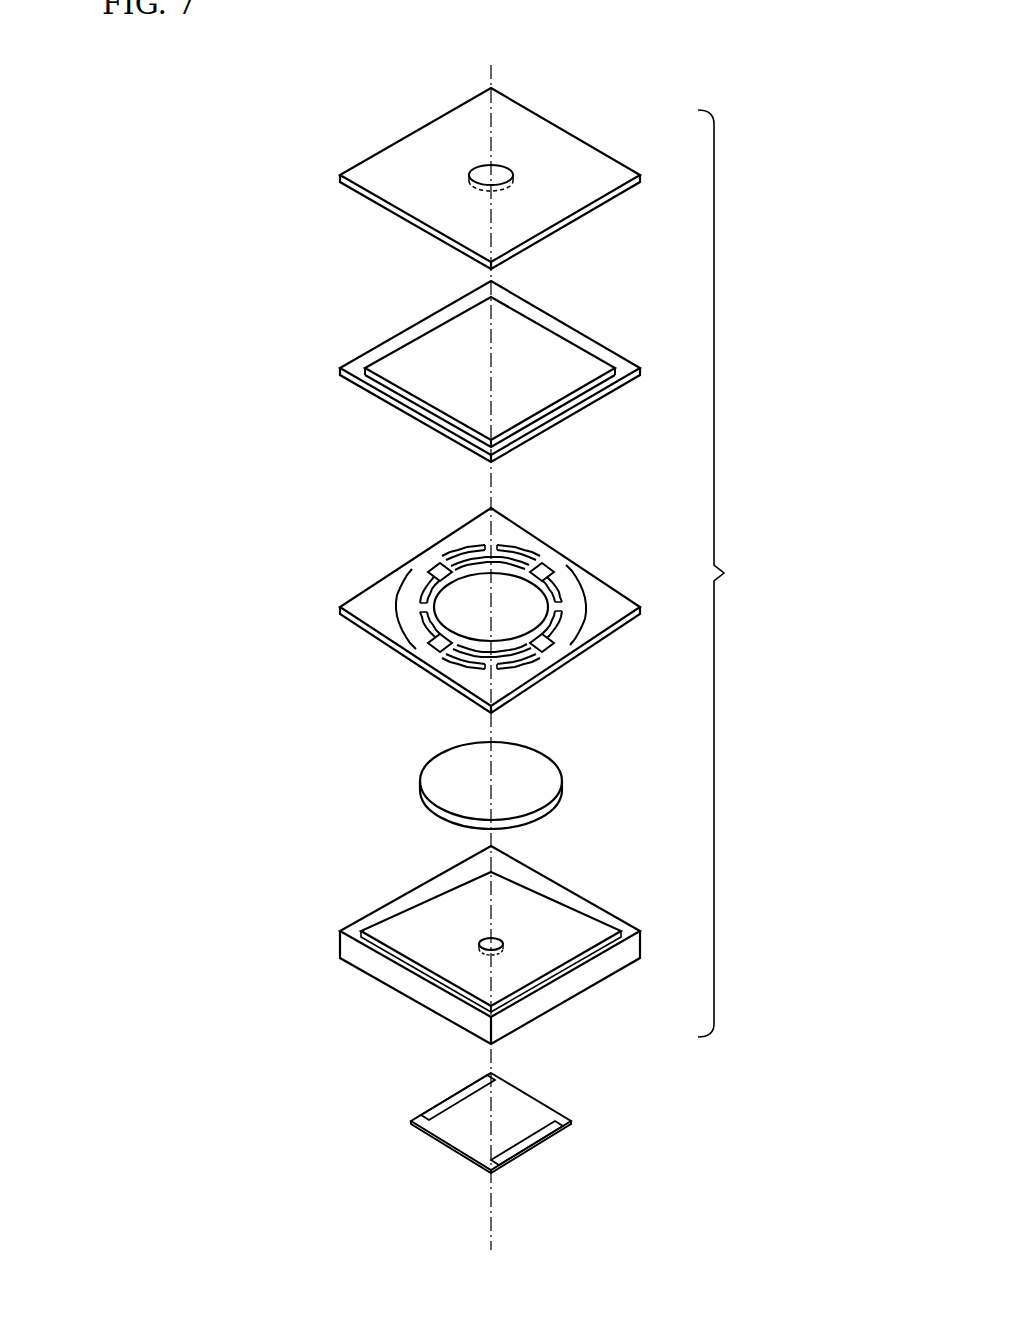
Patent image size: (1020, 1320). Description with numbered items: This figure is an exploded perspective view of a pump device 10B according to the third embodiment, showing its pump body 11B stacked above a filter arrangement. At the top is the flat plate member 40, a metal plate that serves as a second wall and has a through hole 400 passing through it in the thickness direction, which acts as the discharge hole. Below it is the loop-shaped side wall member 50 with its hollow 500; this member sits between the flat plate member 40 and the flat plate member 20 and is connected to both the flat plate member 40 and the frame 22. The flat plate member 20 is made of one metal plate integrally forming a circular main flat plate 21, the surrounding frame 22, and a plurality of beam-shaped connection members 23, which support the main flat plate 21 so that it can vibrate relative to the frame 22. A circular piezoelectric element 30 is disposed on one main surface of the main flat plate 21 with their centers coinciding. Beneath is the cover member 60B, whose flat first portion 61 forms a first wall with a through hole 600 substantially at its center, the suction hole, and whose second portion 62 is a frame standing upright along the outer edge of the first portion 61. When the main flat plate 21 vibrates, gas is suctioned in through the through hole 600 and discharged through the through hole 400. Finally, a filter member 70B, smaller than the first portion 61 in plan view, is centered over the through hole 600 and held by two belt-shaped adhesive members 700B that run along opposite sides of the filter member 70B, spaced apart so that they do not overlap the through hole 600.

The pump device 10B is at (654, 77).
The pump body 11B is at (739, 573).
The flat plate member 40 is at (499, 172).
The through hole 400 is at (497, 172).
The side wall member 50 is at (499, 371).
The hollow 500 is at (540, 352).
The flat plate member 20 is at (494, 602).
The main flat plate 21 is at (455, 595).
The frame 22 is at (600, 590).
The connection members 23 is at (572, 630).
The piezoelectric element 30 is at (550, 780).
The cover member 60B is at (525, 945).
The through hole 600 is at (499, 941).
The first portion 61 is at (554, 939).
The second portion 62 is at (587, 972).
The filter member 70B is at (513, 1117).
The adhesive members 700B is at (432, 1118).